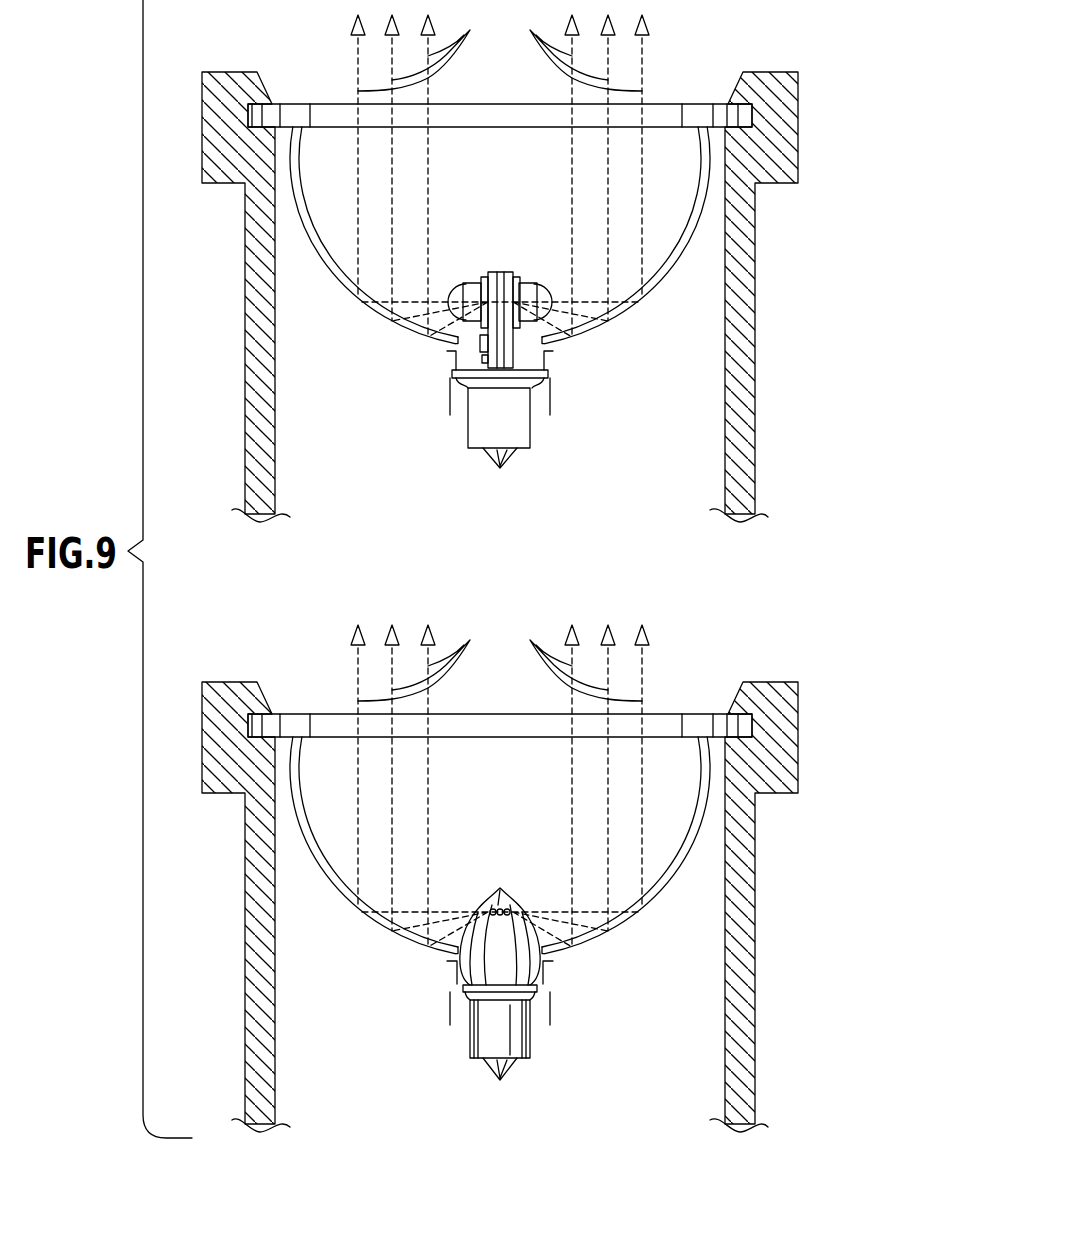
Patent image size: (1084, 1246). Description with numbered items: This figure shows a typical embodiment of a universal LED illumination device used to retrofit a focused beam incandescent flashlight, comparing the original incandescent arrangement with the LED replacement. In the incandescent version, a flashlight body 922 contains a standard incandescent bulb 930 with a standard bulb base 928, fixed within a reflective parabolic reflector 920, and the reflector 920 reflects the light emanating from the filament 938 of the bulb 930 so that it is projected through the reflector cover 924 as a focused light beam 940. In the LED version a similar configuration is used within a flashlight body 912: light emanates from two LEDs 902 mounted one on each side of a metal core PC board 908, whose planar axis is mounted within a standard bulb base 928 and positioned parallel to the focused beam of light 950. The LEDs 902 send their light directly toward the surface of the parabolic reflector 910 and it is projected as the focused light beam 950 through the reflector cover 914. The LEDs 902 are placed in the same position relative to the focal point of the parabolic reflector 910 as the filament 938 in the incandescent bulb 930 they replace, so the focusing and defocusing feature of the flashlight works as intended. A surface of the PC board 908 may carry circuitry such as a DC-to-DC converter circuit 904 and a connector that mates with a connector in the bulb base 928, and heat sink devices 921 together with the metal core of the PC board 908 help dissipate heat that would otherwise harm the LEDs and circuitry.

The LEDs 902 is at (537, 285).
The DC-to-DC converter circuit 904 is at (480, 342).
The metal core PC board 908 is at (449, 373).
The parabolic reflector 910 is at (683, 255).
The flashlight body 912 is at (782, 72).
The reflector cover 914 is at (300, 104).
The parabolic reflector 920 is at (398, 936).
The heat sink devices 921 is at (485, 328).
The flashlight body 922 is at (278, 1046).
The reflector cover 924 is at (318, 714).
The standard bulb base 928 is at (530, 425).
The standard incandescent bulb 930 is at (528, 968).
The filament 938 is at (500, 905).
The focused light beam 940 is at (500, 773).
The focused light beam 950 is at (500, 168).